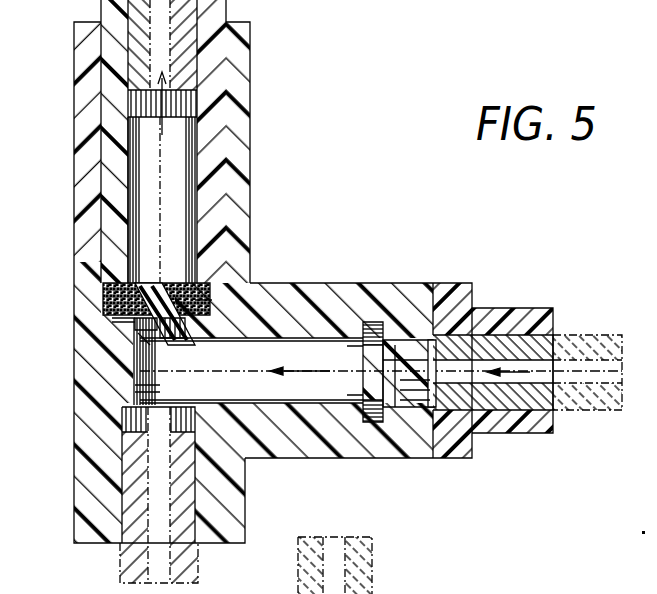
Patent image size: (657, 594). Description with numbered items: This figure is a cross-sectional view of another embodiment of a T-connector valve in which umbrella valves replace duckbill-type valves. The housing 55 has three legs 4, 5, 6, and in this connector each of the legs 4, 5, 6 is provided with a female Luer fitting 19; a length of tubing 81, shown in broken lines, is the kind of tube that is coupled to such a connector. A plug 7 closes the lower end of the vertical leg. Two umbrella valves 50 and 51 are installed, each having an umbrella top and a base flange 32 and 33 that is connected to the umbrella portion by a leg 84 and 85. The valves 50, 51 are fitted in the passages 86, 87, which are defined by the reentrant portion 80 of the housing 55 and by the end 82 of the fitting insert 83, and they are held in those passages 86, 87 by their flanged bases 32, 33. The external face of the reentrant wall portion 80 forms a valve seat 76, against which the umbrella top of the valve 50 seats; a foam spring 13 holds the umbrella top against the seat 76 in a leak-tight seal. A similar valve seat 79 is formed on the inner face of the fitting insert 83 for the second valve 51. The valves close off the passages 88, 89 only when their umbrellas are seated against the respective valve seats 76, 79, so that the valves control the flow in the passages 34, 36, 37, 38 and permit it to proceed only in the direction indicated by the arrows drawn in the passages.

The leg 4 is at (78, 490).
The leg 5 is at (78, 106).
The leg 6 is at (306, 448).
The plug 7 is at (165, 467).
The foam spring 13 is at (137, 283).
The female Luer fitting 19 is at (555, 325).
The base flange 32 is at (162, 352).
The base flange 33 is at (440, 330).
The passage 34 is at (523, 347).
The passage 36 is at (262, 376).
The passage 37 is at (135, 388).
The passage 38 is at (171, 175).
The umbrella valve 50 is at (165, 290).
The umbrella valve 51 is at (365, 370).
The housing 55 is at (313, 232).
The valve seat 76 is at (113, 293).
The valve seat 79 is at (370, 326).
The reentrant portion 80 is at (140, 335).
The tubing 81 is at (372, 577).
The end of fitting insert 82 is at (430, 340).
The fitting insert 83 is at (500, 318).
The leg 84 is at (135, 322).
The leg 85 is at (408, 440).
The passage 86 is at (175, 338).
The passage 87 is at (390, 342).
The passage 88 is at (397, 345).
The passage 89 is at (112, 318).